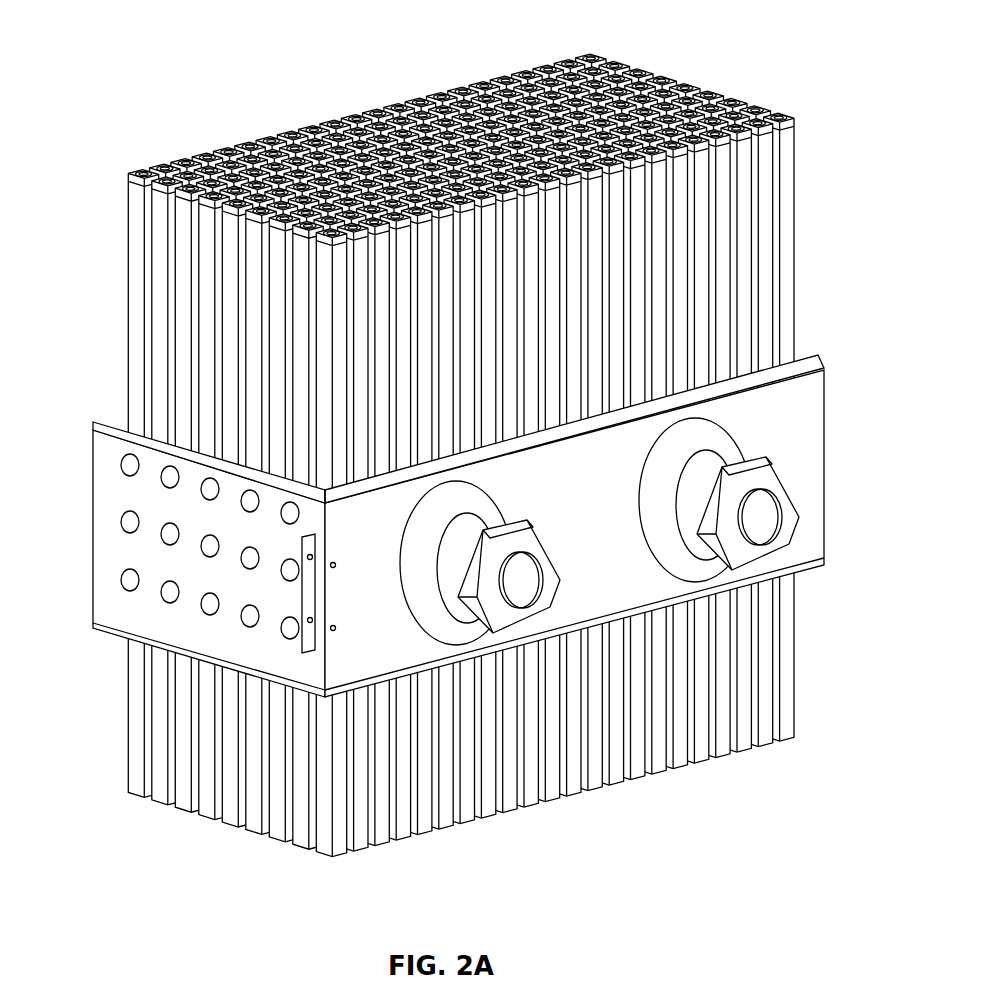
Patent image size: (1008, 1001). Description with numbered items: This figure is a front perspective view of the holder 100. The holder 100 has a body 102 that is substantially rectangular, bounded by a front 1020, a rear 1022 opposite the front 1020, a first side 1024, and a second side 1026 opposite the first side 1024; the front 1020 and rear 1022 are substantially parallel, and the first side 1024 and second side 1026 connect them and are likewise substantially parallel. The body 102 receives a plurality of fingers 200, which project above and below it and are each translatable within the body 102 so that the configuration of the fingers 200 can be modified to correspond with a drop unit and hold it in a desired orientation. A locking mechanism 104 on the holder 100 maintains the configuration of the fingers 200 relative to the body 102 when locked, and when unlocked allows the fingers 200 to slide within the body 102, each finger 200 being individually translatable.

The holder 100 is at (465, 512).
The body 102 is at (804, 526).
The locking mechanism 104 is at (527, 543).
The fingers 200 is at (723, 85).
The front 1020 is at (813, 392).
The rear 1022 is at (123, 410).
The first side 1024 is at (103, 528).
The second side 1026 is at (808, 353).